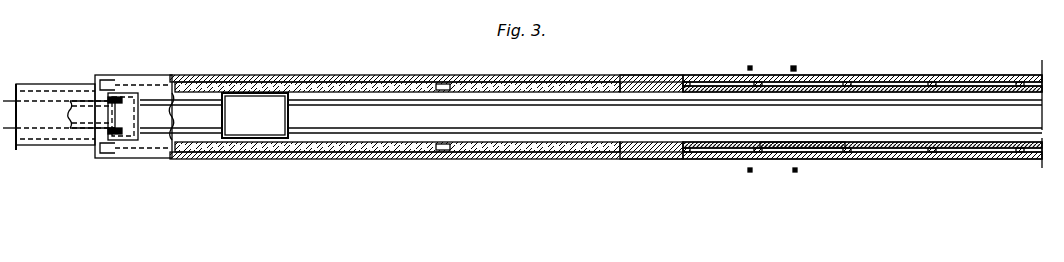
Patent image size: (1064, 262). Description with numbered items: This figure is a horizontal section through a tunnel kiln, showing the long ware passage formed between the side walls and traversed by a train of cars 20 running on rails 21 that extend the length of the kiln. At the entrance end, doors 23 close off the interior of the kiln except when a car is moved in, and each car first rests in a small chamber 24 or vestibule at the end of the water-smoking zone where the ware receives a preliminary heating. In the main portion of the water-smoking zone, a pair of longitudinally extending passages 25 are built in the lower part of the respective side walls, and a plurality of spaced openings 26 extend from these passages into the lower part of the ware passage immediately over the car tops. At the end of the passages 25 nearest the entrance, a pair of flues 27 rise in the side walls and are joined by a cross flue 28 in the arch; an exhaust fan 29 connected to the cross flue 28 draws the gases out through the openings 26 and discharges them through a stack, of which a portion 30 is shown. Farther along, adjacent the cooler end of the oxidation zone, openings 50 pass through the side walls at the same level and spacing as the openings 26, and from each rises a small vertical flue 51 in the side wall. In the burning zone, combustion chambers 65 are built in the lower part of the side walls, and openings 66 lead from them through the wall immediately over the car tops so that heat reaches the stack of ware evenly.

The cars 20 is at (270, 138).
The rails 21 is at (342, 106).
The doors 23 is at (16, 150).
The chamber 24 is at (42, 100).
The longitudinally extending passages 25 is at (313, 83).
The spaced openings 26 is at (270, 91).
The flues 27 is at (117, 82).
The cross flue 28 is at (136, 95).
The exhaust fan 29 is at (135, 140).
The stack portion 30 is at (80, 110).
The openings 50 is at (465, 92).
The vertical flue 51 is at (448, 91).
The combustion chambers 65 is at (708, 82).
The openings 66 is at (805, 142).